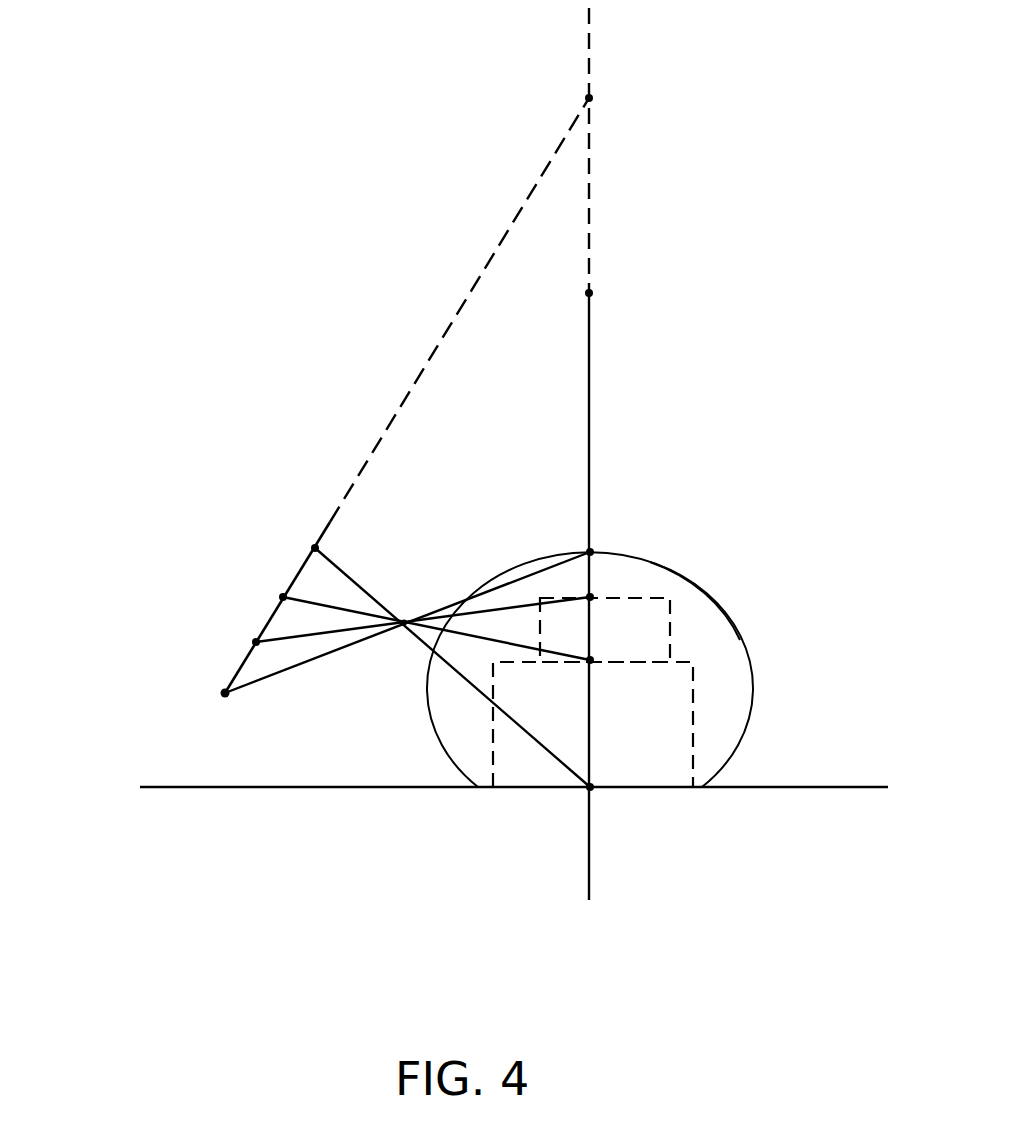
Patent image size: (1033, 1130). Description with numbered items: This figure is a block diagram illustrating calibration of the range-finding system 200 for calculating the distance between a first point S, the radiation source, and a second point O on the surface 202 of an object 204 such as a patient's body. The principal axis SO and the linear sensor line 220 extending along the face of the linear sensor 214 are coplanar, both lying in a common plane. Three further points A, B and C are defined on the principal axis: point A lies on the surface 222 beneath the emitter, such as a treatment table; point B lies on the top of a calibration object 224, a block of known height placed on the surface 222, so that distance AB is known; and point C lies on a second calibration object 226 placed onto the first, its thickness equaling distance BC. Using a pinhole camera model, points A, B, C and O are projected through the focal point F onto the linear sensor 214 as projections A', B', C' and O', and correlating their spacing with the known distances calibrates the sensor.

The system 200 is at (228, 90).
The linear sensor 214 is at (236, 660).
The linear sensor line 220 is at (433, 353).
The surface 202 is at (650, 562).
The object 204 is at (700, 587).
The second calibration object 226 is at (670, 637).
The calibration object 224 is at (693, 695).
The surface 222 is at (762, 787).